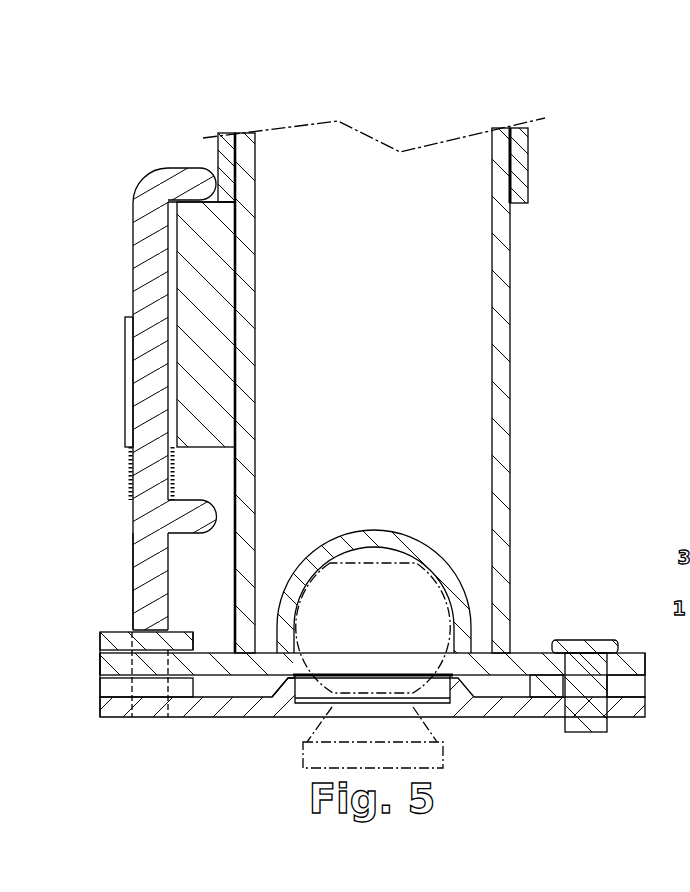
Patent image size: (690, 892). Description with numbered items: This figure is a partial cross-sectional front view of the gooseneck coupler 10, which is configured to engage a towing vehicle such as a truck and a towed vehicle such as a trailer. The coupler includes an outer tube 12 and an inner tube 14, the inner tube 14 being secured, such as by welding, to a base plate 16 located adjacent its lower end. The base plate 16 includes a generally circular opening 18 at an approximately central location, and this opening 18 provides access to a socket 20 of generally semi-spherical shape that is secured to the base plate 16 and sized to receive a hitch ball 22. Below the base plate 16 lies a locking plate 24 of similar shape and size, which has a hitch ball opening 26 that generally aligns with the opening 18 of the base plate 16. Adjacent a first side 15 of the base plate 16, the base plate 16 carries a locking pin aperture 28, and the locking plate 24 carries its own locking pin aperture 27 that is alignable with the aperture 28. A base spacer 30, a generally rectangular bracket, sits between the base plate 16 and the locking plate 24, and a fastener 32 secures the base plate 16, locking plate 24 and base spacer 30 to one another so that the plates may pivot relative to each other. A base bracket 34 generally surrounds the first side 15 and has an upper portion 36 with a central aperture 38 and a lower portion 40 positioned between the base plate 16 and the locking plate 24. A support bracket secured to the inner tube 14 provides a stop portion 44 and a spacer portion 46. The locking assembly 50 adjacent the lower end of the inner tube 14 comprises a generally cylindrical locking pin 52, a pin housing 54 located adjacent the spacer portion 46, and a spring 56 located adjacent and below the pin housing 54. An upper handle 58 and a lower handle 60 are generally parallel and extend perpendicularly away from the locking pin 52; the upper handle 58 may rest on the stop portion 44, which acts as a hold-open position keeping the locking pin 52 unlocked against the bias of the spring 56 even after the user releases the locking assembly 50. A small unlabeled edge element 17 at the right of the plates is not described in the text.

The gooseneck coupler 10 is at (477, 100).
The outer tube 12 is at (518, 172).
The inner tube 14 is at (503, 291).
The first side of the base plate 15 is at (100, 660).
The base plate 16 is at (513, 667).
The plate edge 17 is at (651, 661).
The opening 18 is at (452, 690).
The socket 20 is at (445, 567).
The hitch ball 22 is at (300, 750).
The locking plate 24 is at (513, 706).
The hitch ball opening 26 is at (292, 682).
The locking pin aperture of the locking plate 27 is at (172, 700).
The locking pin aperture of the base plate 28 is at (133, 660).
The base spacer 30 is at (630, 685).
The fastener 32 is at (585, 660).
The base bracket 34 is at (107, 612).
The upper portion 36 is at (113, 640).
The aperture 38 is at (168, 642).
The lower portion 40 is at (115, 688).
The stop portion 44 is at (213, 203).
The spacer portion 46 is at (207, 302).
The locking assembly 50 is at (122, 262).
The locking pin 52 is at (150, 603).
The pin housing 54 is at (128, 390).
The spring 56 is at (130, 479).
The upper handle 58 is at (190, 188).
The lower handle 60 is at (197, 517).